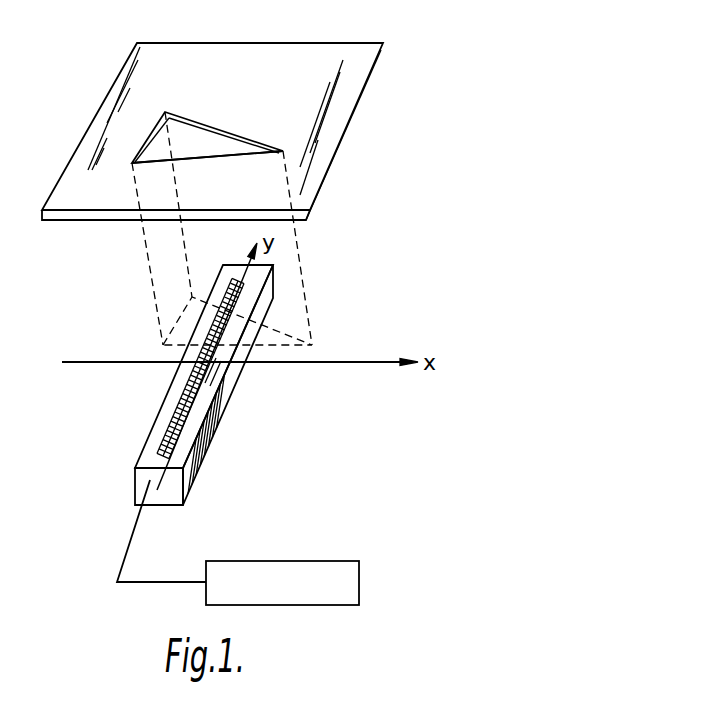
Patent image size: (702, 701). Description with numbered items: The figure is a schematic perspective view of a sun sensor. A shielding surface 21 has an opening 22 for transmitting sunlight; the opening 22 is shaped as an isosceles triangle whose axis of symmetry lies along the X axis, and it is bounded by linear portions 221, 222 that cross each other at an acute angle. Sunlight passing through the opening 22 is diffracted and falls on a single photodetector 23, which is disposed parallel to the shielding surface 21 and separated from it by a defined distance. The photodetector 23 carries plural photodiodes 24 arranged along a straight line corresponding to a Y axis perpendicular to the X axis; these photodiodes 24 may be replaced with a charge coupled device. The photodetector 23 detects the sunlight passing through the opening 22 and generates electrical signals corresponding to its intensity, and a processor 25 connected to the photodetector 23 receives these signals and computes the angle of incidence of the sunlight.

The shielding surface 21 is at (318, 52).
The opening 22 is at (207, 146).
The linear portion 221 is at (225, 137).
The linear portion 222 is at (245, 157).
The photodetector 23 is at (213, 416).
The photodiodes 24 is at (177, 423).
The processor 25 is at (252, 561).